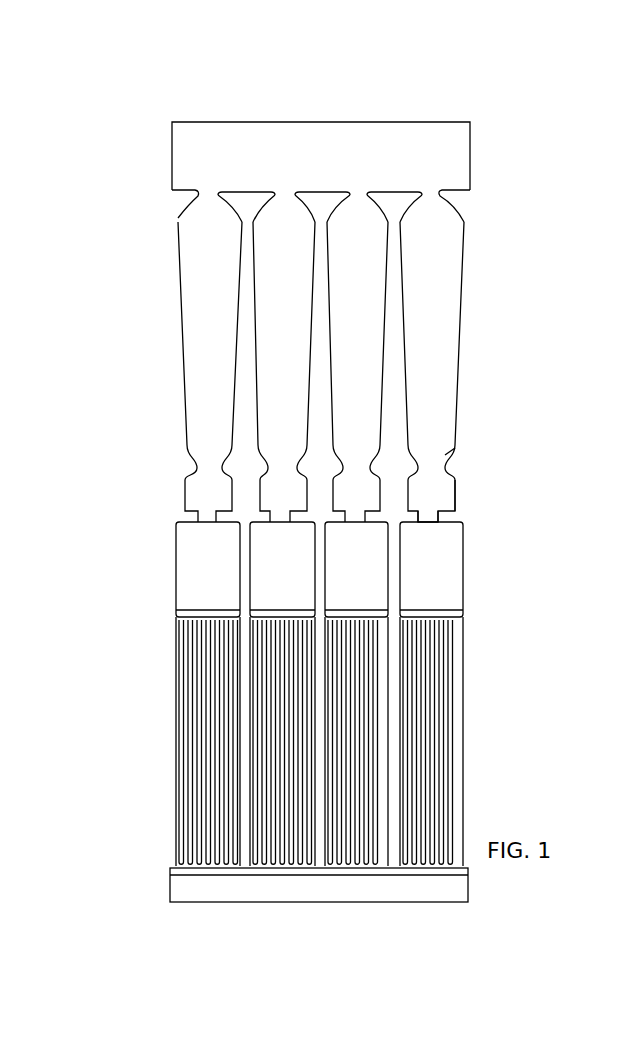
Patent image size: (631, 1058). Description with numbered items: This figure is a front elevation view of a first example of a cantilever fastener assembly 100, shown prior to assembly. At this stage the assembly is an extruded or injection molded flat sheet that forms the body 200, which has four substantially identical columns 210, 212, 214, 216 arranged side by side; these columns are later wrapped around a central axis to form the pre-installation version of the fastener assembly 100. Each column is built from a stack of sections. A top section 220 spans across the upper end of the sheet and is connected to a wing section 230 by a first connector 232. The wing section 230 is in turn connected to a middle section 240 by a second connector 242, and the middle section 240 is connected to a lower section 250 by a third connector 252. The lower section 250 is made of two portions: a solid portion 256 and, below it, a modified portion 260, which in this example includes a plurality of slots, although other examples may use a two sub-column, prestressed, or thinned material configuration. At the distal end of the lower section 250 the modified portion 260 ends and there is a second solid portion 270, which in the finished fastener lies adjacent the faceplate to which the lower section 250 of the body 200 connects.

The cantilever fastener assembly 100 is at (493, 95).
The body 200 is at (156, 150).
The top section 220 is at (630, 146).
The first connector 232 is at (437, 194).
The wing section 230 is at (182, 340).
The column 210 is at (210, 372).
The column 212 is at (284, 372).
The column 214 is at (357, 372).
The column 216 is at (432, 372).
The second connector 242 is at (445, 470).
The middle section 240 is at (453, 483).
The lower section 250 is at (166, 860).
The third connector 252 is at (447, 521).
The solid portion 256 is at (445, 596).
The modified portion 260 is at (465, 718).
The second solid portion 270 is at (458, 887).